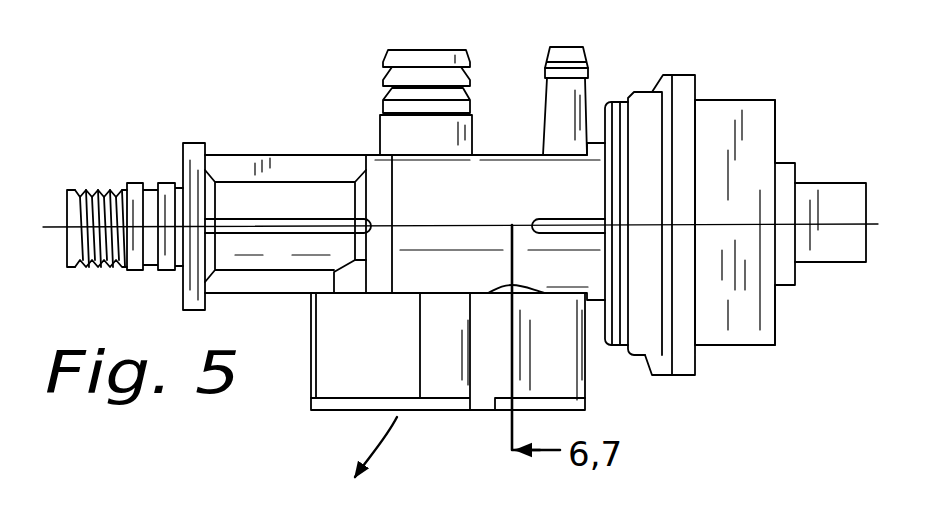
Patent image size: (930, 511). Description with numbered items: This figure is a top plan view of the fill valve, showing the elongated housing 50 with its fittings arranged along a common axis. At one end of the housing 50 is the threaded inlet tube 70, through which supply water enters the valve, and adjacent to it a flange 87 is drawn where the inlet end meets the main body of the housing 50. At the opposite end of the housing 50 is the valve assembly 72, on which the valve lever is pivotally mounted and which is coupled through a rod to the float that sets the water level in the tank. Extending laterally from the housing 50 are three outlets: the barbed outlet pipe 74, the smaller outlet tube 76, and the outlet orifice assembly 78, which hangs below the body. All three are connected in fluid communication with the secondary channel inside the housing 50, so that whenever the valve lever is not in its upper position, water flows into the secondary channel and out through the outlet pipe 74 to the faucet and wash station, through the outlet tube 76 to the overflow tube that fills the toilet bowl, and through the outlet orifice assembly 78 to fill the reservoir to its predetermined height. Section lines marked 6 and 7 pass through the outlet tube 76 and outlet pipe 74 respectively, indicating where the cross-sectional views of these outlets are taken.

The inlet tube 70 is at (75, 202).
The flange 87 is at (188, 163).
The housing 50 is at (245, 155).
The outlet pipe 74 is at (380, 133).
The outlet tube 76 is at (577, 112).
The valve assembly 72 is at (753, 86).
The outlet orifice assembly 78 is at (297, 346).
The section line 7- 7 is at (510, 225).
The section line 6- 6 is at (520, 225).